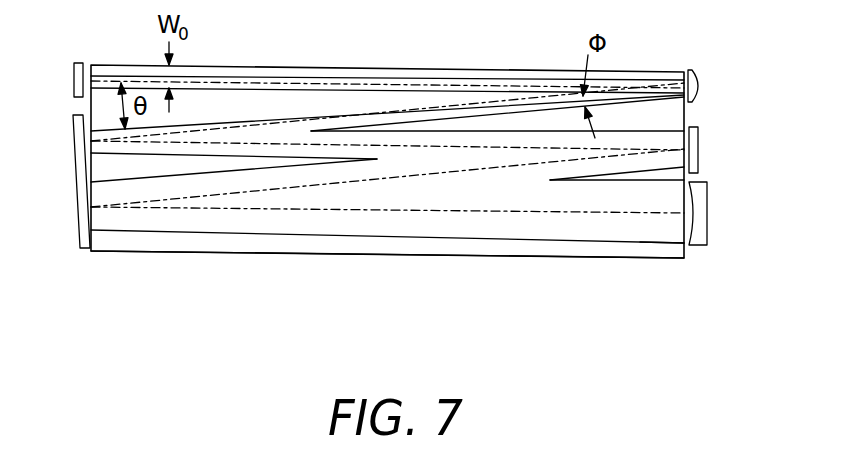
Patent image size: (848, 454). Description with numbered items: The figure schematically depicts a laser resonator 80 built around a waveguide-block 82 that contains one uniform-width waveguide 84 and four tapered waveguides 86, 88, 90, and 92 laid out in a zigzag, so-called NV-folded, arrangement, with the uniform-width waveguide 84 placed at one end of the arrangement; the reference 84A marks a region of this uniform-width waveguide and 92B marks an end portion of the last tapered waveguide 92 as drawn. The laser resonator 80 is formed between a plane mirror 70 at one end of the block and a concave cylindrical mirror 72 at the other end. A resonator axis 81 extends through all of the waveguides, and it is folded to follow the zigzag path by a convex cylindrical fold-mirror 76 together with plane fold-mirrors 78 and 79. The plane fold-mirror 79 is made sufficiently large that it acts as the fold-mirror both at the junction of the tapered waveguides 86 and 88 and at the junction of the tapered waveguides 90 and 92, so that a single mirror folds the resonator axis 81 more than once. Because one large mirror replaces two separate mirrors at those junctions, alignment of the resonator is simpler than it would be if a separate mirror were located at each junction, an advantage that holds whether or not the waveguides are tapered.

The plane mirror 70 is at (74, 80).
The concave cylindrical mirror 72 is at (700, 193).
The convex cylindrical fold-mirror 76 is at (702, 85).
The plane fold-mirror 78 is at (698, 150).
The plane fold-mirror 79 is at (78, 176).
The laser resonator 80 is at (472, 304).
The resonator axis 81 is at (275, 208).
The waveguide-block 82 is at (342, 256).
The uniform-width waveguide 84 is at (262, 74).
The upper slab strip 84A is at (108, 75).
The tapered waveguide 86 is at (325, 112).
The tapered waveguide 88 is at (622, 131).
The tapered waveguide 90 is at (650, 181).
The tapered waveguide 92 is at (525, 242).
The beam end portion 92B is at (663, 246).